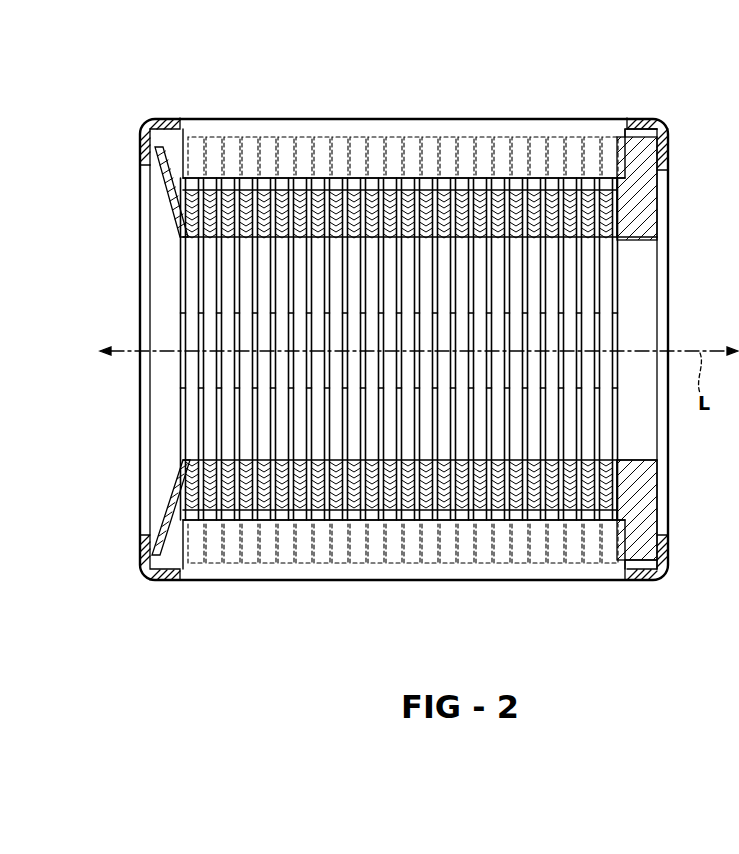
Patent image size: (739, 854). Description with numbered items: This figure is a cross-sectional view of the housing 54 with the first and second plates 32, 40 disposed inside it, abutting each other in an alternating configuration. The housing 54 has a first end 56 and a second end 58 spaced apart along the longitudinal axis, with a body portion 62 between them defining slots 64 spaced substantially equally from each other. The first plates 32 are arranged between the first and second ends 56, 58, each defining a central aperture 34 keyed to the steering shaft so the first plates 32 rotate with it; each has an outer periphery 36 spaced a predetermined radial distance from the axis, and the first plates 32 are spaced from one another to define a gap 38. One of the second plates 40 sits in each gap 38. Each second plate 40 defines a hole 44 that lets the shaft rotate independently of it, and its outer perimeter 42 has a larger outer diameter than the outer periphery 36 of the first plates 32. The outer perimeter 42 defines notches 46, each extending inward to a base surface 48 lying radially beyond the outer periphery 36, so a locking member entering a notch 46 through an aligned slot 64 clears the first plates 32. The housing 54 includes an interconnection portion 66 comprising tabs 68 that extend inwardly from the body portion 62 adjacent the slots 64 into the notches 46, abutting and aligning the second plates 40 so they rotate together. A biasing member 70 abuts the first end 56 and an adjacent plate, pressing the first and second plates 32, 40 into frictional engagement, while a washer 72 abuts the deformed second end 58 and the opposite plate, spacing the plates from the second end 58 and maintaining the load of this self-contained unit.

The first plates 32 is at (365, 220).
The aperture 34 is at (237, 332).
The outer periphery 36 is at (261, 178).
The gap 38 is at (437, 137).
The second plates 40 is at (392, 200).
The outer perimeter 42 is at (304, 137).
The hole 44 is at (210, 398).
The notch 46 is at (235, 190).
The base surface 48 is at (455, 195).
The housing 54 is at (664, 126).
The first end 56 is at (148, 560).
The second end 58 is at (672, 556).
The body portion 62 is at (172, 118).
The slot 64 is at (632, 124).
The interconnection portion 66 is at (607, 106).
The tabs 68 is at (537, 128).
The biasing member 70 is at (185, 500).
The washer 72 is at (640, 180).